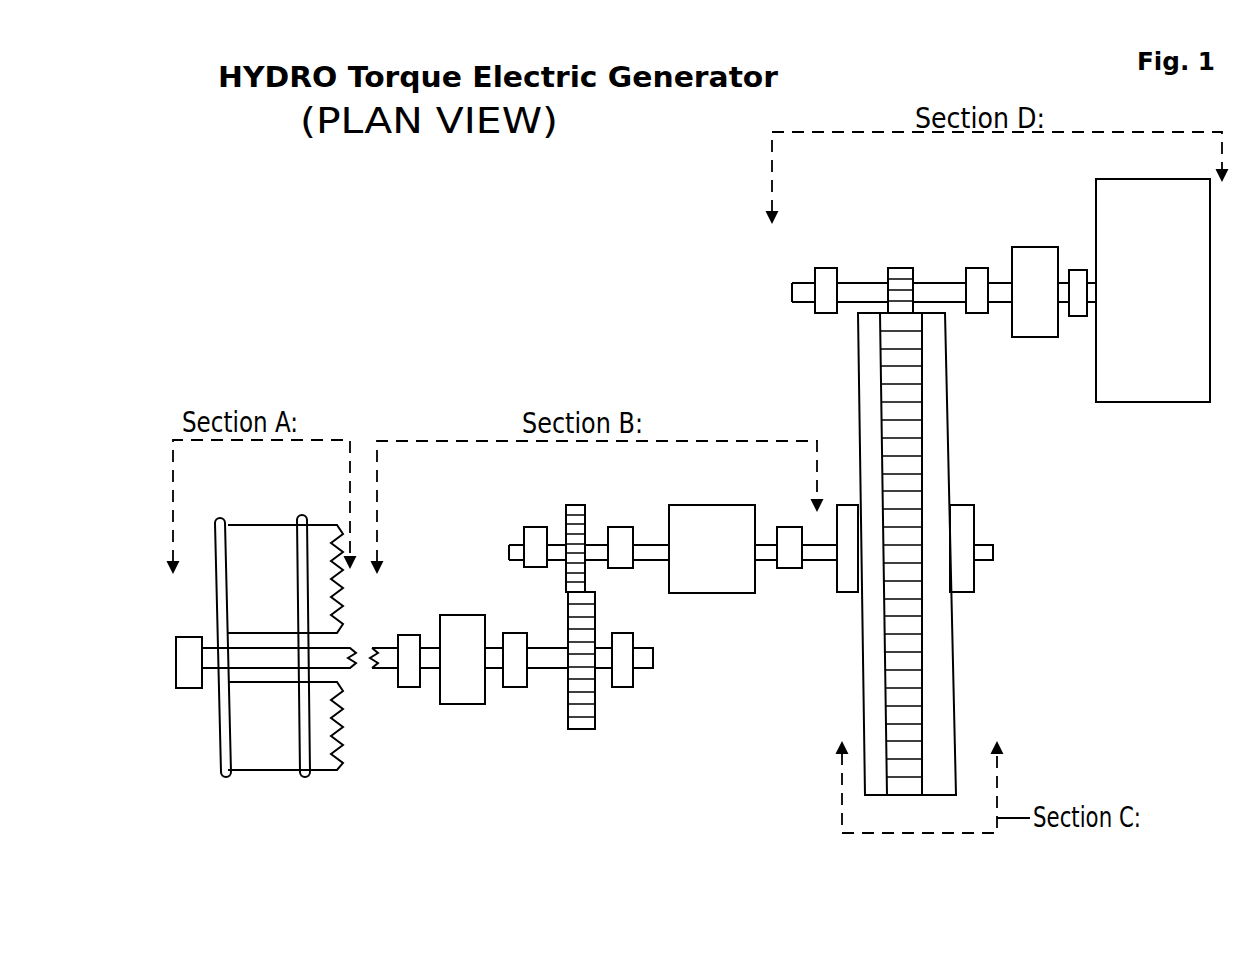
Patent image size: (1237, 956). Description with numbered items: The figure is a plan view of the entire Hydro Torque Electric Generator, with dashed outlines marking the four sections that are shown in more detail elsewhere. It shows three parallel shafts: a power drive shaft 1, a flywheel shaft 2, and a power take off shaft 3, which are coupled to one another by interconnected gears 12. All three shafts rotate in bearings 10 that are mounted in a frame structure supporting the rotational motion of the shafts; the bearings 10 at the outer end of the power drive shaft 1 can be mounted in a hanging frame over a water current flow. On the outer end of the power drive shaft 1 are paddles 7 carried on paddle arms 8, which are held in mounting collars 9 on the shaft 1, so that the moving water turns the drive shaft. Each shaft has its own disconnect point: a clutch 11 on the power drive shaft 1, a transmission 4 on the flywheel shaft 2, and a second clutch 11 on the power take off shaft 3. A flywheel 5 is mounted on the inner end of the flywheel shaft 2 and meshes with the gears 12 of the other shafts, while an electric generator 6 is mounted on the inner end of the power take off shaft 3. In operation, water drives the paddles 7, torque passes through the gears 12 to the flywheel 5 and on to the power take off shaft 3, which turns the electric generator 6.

The power drive shaft 1 is at (388, 644).
The flywheel shaft 2 is at (996, 553).
The power take off shaft 3 is at (790, 293).
The transmission 4 is at (710, 504).
The flywheel 5 is at (958, 648).
The electric generator 6 is at (1143, 404).
The paddles 7 is at (260, 523).
The paddle arms 8 is at (218, 748).
The mounting collars 9 is at (216, 645).
The shaft bearings 10 is at (187, 690).
The clutch 11 is at (467, 706).
The gears 12 is at (574, 504).